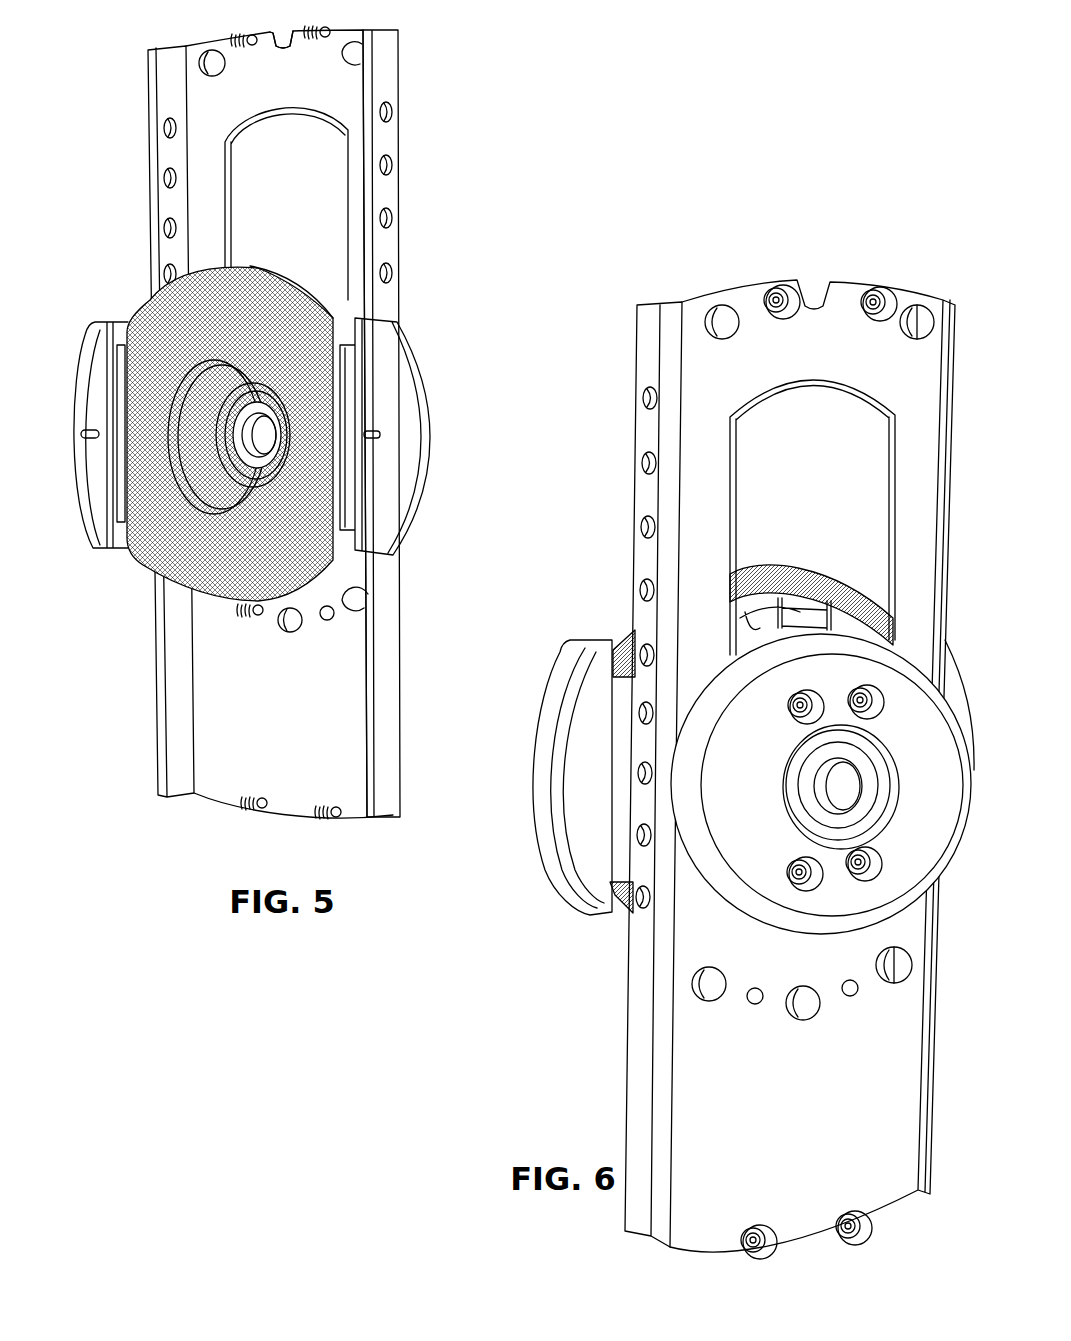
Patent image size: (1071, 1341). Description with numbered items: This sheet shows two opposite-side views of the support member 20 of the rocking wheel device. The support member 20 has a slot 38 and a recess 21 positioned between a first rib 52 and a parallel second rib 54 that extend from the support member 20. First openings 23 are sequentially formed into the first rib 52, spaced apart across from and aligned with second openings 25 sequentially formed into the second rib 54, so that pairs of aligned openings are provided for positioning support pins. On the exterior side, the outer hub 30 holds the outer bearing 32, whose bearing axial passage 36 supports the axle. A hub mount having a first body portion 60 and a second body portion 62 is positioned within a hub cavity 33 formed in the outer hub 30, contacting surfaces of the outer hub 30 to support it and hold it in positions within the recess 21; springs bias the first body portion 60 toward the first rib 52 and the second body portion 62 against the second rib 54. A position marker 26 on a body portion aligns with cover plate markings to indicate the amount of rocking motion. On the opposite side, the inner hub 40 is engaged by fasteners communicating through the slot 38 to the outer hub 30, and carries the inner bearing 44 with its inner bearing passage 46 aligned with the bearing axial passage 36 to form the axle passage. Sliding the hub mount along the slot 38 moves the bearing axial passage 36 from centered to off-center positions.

In FIG. 5, the support member 20 is at (327, 90).
In FIG. 6, the support member 20 is at (823, 335).
In FIG. 5, the recess 21 is at (280, 90).
In FIG. 5, the first openings 23 is at (168, 180).
In FIG. 5, the second openings 25 is at (388, 277).
In FIG. 6, the second openings 25 is at (648, 522).
In FIG. 5, the position marker 26 is at (373, 432).
In FIG. 5, the outer hub 30 is at (313, 300).
In FIG. 6, the outer hub 30 is at (810, 590).
In FIG. 5, the outer bearing 32 is at (248, 418).
In FIG. 6, the hub cavity 33 is at (760, 622).
In FIG. 5, the bearing axial passage 36 is at (255, 437).
In FIG. 5, the slot 38 is at (323, 195).
In FIG. 6, the slot 38 is at (802, 417).
In FIG. 6, the inner hub 40 is at (933, 827).
In FIG. 6, the inner bearing 44 is at (815, 807).
In FIG. 6, the inner bearing passage 46 is at (828, 790).
In FIG. 5, the first rib 52 is at (150, 113).
In FIG. 5, the second rib 54 is at (368, 135).
In FIG. 6, the second rib 54 is at (640, 372).
In FIG. 5, the first body portion 60 is at (105, 543).
In FIG. 5, the second body portion 62 is at (403, 493).
In FIG. 6, the second body portion 62 is at (563, 810).